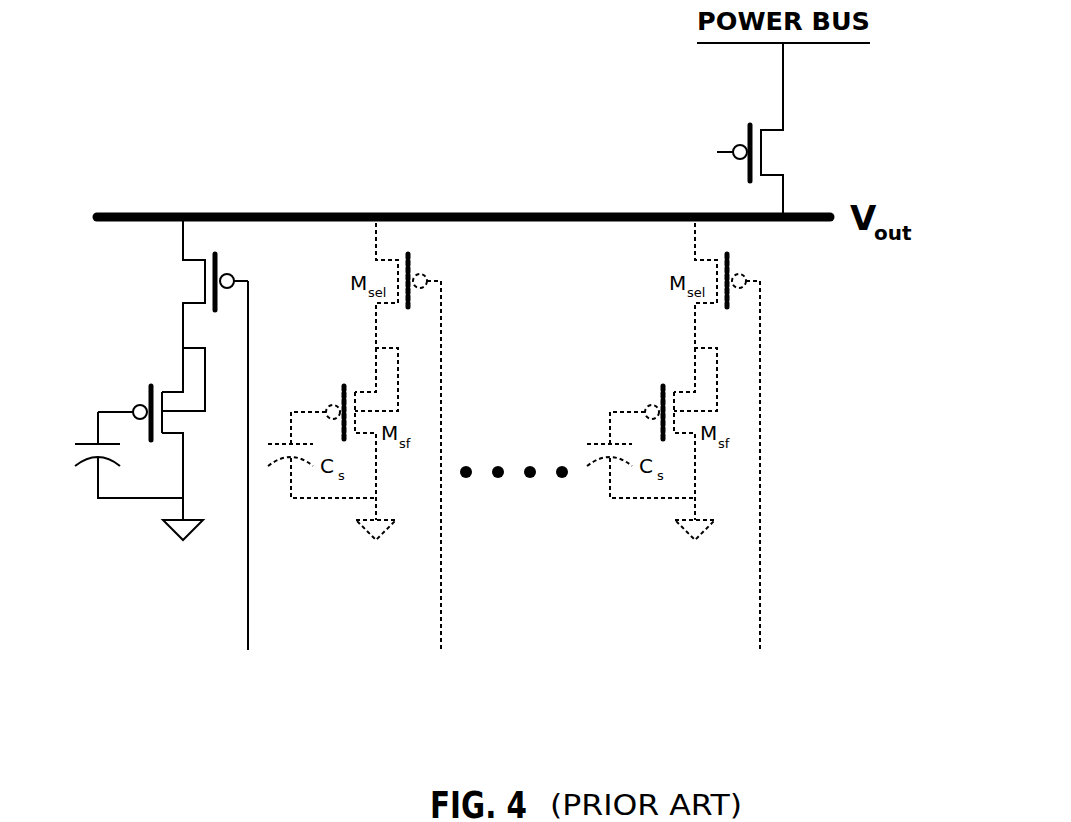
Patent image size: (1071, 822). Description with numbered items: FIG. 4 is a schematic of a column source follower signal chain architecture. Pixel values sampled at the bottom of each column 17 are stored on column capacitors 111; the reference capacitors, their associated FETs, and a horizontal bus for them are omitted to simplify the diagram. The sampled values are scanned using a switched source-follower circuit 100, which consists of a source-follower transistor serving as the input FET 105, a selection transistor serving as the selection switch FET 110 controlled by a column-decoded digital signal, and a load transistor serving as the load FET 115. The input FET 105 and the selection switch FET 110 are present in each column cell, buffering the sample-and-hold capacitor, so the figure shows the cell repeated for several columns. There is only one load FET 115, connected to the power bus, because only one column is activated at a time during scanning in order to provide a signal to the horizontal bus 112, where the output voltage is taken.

The switched source-follower circuit 100 is at (180, 165).
The input FET 105 is at (146, 393).
The selection switch FET 110 is at (218, 262).
The column capacitor 111 is at (76, 451).
The horizontal bus 112 is at (617, 212).
The load FET 115 is at (749, 124).
The column 17 is at (249, 603).